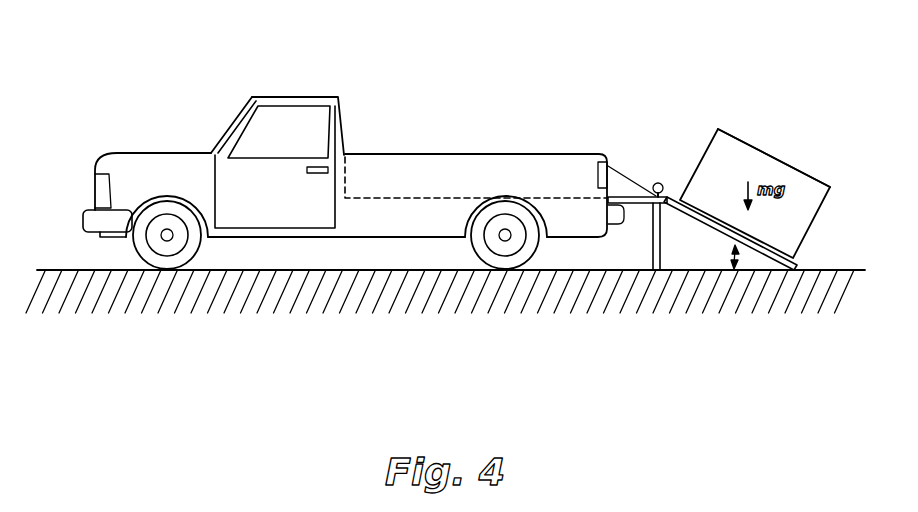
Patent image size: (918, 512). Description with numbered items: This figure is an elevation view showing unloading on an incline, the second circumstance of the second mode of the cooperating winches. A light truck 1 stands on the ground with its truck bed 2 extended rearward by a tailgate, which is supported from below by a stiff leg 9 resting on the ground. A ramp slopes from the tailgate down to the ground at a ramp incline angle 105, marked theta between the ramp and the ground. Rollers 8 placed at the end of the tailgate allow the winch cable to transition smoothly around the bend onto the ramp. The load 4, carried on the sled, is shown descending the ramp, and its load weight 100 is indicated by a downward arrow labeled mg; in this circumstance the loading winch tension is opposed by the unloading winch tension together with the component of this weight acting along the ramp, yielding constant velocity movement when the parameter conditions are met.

The light truck 1 is at (322, 72).
The truck bed 2 is at (409, 198).
The load 4 is at (743, 140).
The rollers 8 is at (657, 182).
The stiff leg 9 is at (652, 247).
The load weight (mg) 100 is at (777, 175).
The ramp incline angle (θ) 105 is at (706, 268).